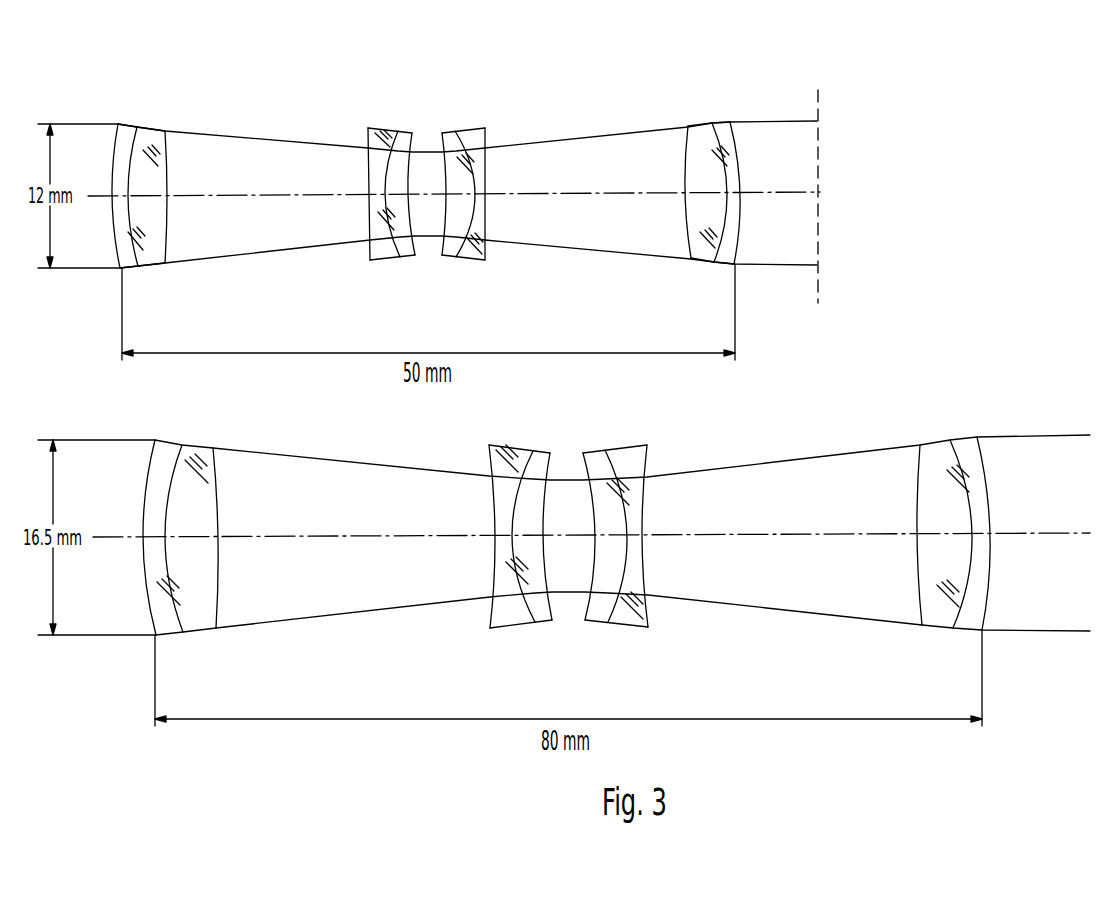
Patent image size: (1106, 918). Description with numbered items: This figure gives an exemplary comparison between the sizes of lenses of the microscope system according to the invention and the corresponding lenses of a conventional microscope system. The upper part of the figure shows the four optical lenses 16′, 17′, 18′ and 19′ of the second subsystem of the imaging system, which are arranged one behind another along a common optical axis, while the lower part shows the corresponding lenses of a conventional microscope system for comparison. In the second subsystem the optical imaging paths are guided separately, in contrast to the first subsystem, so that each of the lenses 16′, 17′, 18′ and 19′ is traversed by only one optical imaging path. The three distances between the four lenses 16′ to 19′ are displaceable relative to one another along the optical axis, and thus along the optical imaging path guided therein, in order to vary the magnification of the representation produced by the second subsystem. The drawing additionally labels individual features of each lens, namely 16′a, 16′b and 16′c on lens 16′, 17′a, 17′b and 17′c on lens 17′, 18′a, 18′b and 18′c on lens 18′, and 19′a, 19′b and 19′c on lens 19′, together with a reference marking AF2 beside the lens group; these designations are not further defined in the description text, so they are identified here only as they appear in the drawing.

The optical lens 16′ is at (715, 179).
The lens surface a of lens 16′ 16′a is at (746, 121).
The cemented lens surface b of lens 16′ 16′b is at (724, 123).
The lens surface c of lens 16′ 16′c is at (690, 125).
The optical lens 17′ is at (467, 181).
The lens surface a of lens 17′ 17′a is at (496, 125).
The cemented lens surface b of lens 17′ 17′b is at (447, 131).
The lens surface c of lens 17′ 17′c is at (441, 127).
The optical lens 18′ is at (382, 181).
The lens surface a of lens 18′ 18′a is at (423, 125).
The cemented lens surface b of lens 18′ 18′b is at (401, 130).
The lens surface c of lens 18′ 18′c is at (367, 125).
The optical lens 19′ is at (135, 182).
The lens surface a of lens 19′ 19′a is at (177, 128).
The cemented lens surface b of lens 19′ 19′b is at (138, 126).
The lens surface c of lens 19′ 19′c is at (116, 124).
The aperture/focal plane AF2 is at (823, 292).